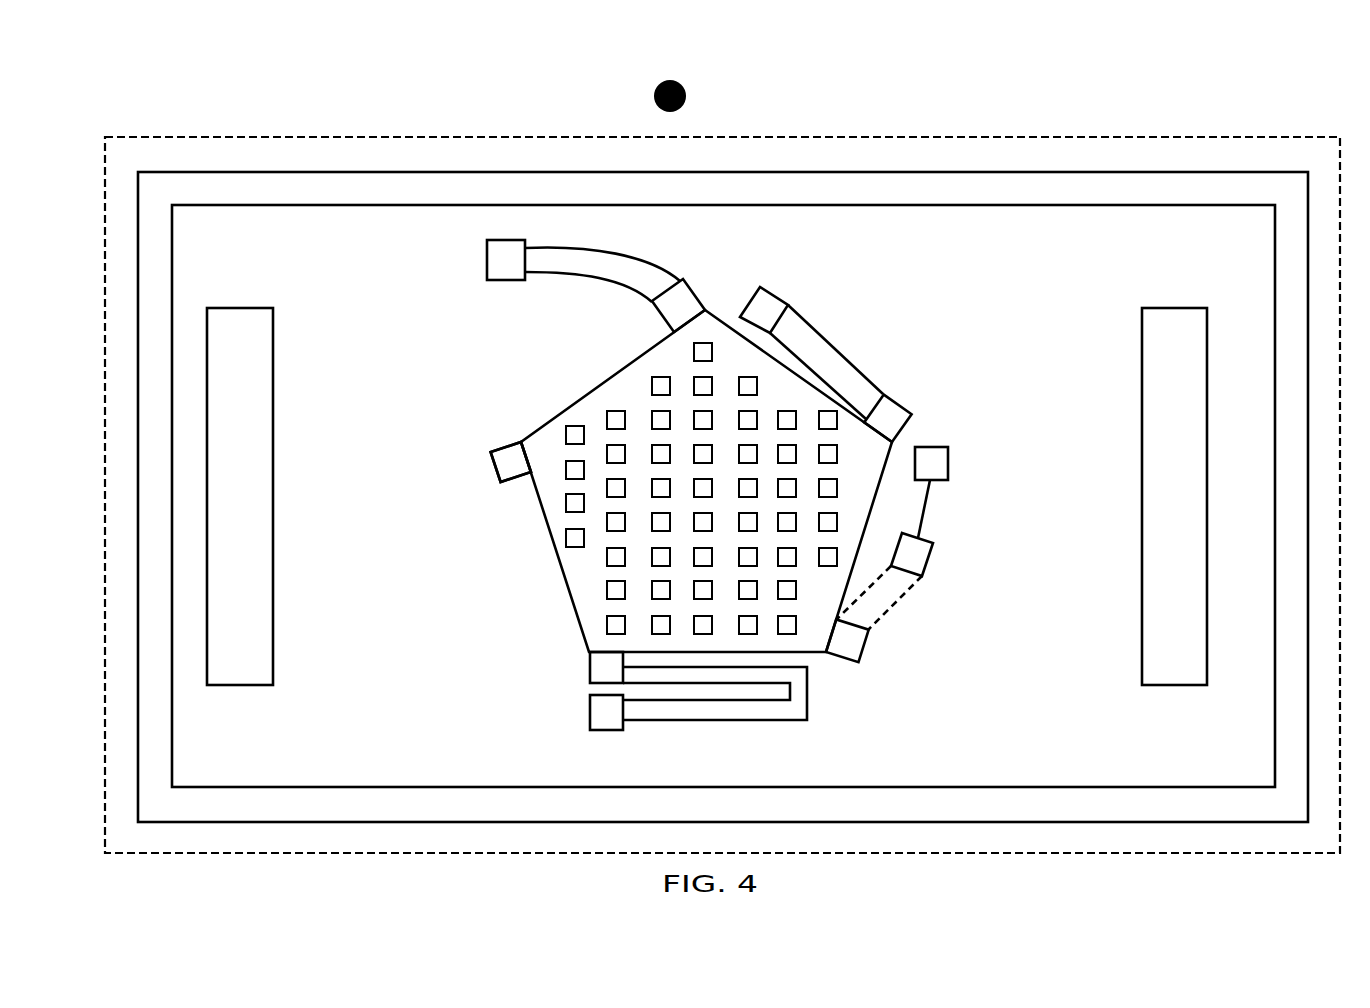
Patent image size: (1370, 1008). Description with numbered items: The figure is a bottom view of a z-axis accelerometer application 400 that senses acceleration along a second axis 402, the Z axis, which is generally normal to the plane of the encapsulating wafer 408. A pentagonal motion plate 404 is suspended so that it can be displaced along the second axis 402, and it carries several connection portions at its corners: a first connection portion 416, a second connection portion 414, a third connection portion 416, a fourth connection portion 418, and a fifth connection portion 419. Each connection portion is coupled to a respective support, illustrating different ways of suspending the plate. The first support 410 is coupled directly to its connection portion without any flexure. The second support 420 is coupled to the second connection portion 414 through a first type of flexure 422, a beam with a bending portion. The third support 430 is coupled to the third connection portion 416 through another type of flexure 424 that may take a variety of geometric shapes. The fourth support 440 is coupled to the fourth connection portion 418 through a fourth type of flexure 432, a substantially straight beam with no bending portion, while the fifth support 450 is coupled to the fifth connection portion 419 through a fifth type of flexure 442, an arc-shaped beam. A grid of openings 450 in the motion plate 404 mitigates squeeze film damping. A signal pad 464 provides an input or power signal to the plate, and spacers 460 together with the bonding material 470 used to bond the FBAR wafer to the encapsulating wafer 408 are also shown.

The z-axis accelerometer application 400 is at (318, 122).
The second axis 402 is at (704, 79).
The motion plate 404 is at (560, 413).
The encapsulating wafer 408 is at (1176, 158).
The first support 410 is at (492, 462).
The second connection portion 414 is at (590, 664).
The first connection portion 416 is at (531, 470).
The fourth connection portion 418 is at (913, 412).
The fifth connection portion 419 is at (661, 318).
The second support 420 is at (590, 716).
The first type of flexure 422 is at (808, 702).
The flexure 424 is at (902, 596).
The third support 430 is at (933, 555).
The fourth type of flexure 432 is at (845, 353).
The fourth support 440 is at (806, 265).
The fifth type of flexure 442 is at (610, 277).
The fifth support 450 is at (580, 564).
The spacers 460 is at (253, 507).
The signal pad 464 is at (948, 463).
The bonding material 470 is at (1288, 740).